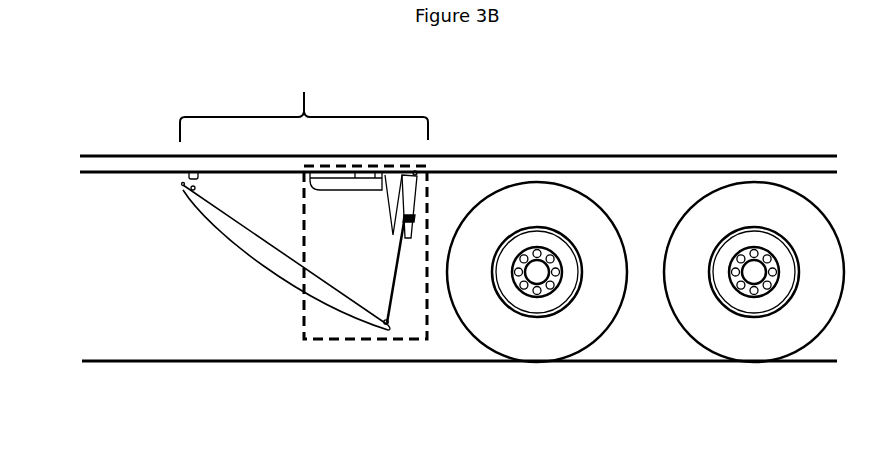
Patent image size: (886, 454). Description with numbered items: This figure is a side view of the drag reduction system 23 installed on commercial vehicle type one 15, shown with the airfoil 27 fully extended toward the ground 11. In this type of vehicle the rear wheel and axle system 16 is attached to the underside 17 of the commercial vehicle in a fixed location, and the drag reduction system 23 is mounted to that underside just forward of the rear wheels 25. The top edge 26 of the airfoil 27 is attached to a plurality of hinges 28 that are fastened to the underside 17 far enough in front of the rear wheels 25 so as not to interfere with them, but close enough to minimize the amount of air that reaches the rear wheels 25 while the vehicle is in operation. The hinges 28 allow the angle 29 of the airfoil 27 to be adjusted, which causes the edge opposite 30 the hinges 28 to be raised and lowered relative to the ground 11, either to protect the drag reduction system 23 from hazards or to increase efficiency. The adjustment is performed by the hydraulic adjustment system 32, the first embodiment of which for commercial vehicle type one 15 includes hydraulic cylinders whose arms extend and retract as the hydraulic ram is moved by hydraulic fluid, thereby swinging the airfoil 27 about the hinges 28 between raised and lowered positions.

The ground 11 is at (254, 360).
The commercial vehicle type one 15 is at (573, 154).
The rear wheel and axle system 16 is at (750, 274).
The underside 17 is at (91, 174).
The drag reduction system 23 is at (304, 103).
The rear wheels 25 is at (712, 331).
The top edge 26 is at (182, 190).
The airfoil 27 is at (286, 257).
The hinges 28 is at (192, 167).
The angle 29 is at (247, 181).
The edge opposite 30 is at (386, 333).
The hydraulic adjustment system 32 is at (365, 252).